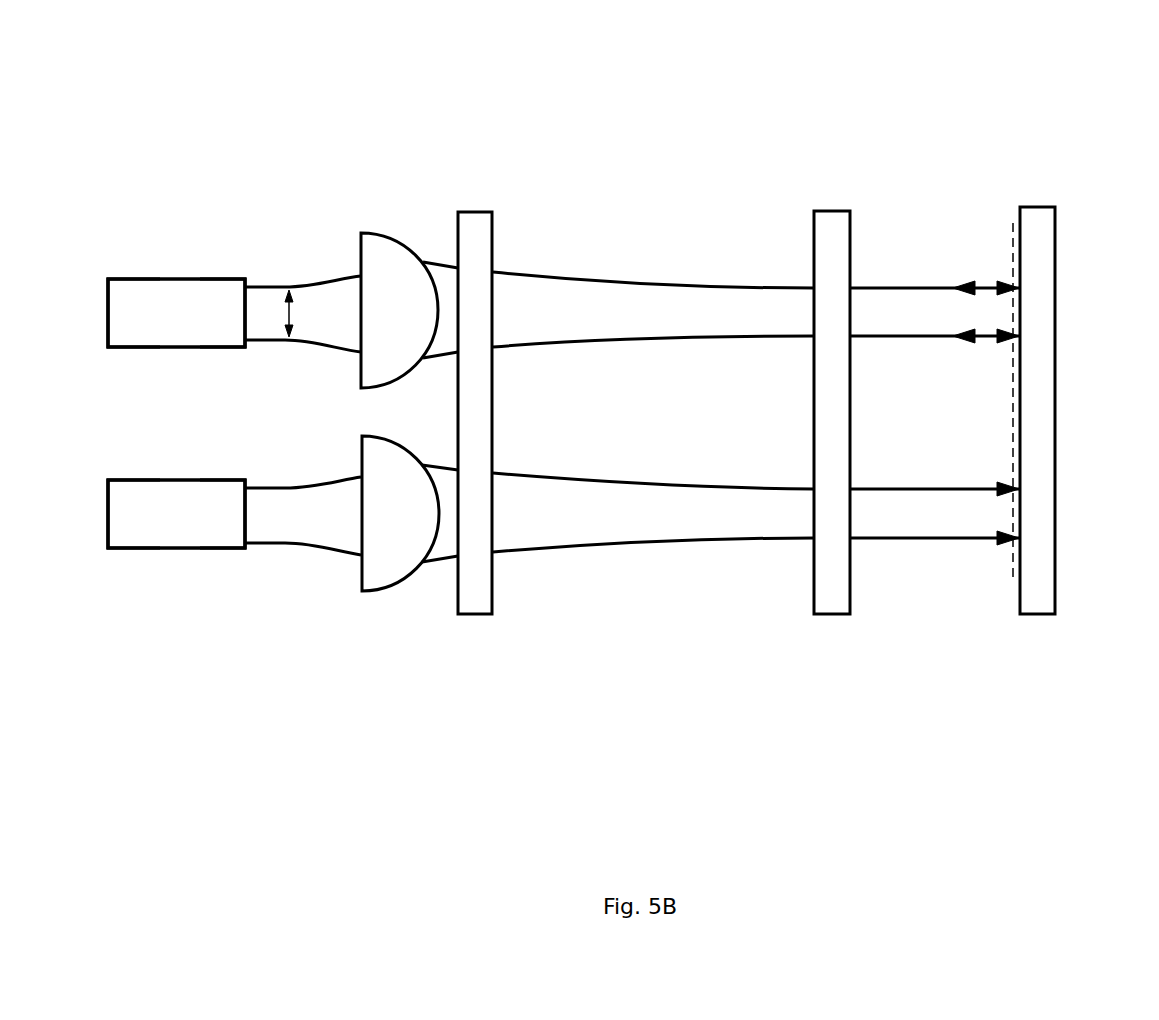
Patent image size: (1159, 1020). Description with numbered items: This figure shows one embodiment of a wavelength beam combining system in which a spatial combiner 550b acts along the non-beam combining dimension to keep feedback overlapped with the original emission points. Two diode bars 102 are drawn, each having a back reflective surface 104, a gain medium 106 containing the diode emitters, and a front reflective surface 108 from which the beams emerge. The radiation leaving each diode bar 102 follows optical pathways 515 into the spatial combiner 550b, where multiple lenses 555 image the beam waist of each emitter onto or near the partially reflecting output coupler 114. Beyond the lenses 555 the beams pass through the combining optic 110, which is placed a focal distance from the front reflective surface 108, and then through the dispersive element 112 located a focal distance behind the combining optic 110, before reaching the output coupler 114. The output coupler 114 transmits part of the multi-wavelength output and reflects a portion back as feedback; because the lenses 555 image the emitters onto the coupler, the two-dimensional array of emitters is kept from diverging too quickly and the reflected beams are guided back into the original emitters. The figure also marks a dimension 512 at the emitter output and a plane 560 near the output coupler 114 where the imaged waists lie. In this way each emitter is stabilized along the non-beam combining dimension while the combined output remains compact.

The diode bar 102 is at (253, 148).
The back reflective surface 104 is at (110, 278).
The gain medium 106 is at (163, 278).
The front reflective surface 108 is at (244, 278).
The combining optic 110 is at (478, 210).
The dispersive element 112 is at (836, 193).
The partially reflecting output coupler 114 is at (1042, 193).
The fiber core diameter 512 is at (287, 337).
The optical pathways 515 is at (343, 349).
The lenses 555 is at (403, 242).
The spatial combiner 550b is at (993, 627).
The focal plane 560 is at (1013, 223).